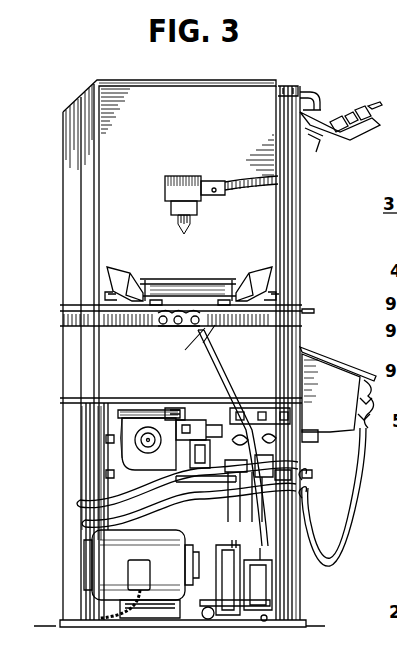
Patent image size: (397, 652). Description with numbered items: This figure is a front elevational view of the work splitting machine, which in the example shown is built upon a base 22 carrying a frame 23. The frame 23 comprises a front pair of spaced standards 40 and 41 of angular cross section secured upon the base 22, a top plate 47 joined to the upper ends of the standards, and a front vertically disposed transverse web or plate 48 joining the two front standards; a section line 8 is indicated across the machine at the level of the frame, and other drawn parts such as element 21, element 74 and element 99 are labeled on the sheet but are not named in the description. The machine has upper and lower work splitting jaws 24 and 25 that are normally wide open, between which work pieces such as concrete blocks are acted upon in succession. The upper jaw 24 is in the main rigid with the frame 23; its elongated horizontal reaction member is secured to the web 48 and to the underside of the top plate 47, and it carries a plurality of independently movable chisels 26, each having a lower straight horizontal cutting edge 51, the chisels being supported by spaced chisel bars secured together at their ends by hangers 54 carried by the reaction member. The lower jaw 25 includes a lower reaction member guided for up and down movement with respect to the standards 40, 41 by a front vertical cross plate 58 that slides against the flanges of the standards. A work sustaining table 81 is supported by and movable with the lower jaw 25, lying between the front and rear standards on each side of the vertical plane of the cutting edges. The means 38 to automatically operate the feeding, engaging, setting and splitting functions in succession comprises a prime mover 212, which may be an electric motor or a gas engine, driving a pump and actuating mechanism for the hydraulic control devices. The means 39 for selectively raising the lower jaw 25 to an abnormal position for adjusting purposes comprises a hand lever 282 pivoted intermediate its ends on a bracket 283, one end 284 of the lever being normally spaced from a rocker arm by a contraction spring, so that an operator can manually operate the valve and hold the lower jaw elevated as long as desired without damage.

The section line 8- 8 is at (132, 344).
The feed arm assembly 21 is at (348, 169).
The base 22 is at (298, 622).
The frame 23 is at (63, 550).
The upper work splitting jaw 24 is at (166, 186).
The lower work splitting jaw 25 is at (167, 370).
The upper chisels 26 is at (172, 223).
The means to automatically operate 38 is at (132, 476).
The means to selectively raise the lower jaw 39 is at (168, 408).
The front standard 40 is at (72, 236).
The front standard 41 is at (303, 237).
The top plate 47 is at (254, 84).
The front transverse web 48 is at (136, 102).
The cutting edge 51 is at (188, 226).
The hanger 54 is at (195, 213).
The front vertical cross plate 58 is at (120, 482).
The pump 74 is at (272, 605).
The work sustaining table 81 is at (314, 311).
The hopper hoses 99 is at (348, 452).
The prime mover 212 is at (88, 590).
The hand lever 282 is at (195, 384).
The bracket 283 is at (174, 409).
The lever end 284 is at (216, 411).